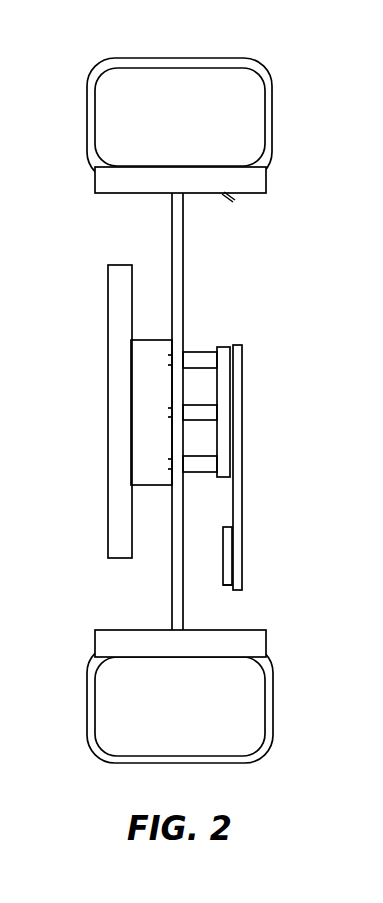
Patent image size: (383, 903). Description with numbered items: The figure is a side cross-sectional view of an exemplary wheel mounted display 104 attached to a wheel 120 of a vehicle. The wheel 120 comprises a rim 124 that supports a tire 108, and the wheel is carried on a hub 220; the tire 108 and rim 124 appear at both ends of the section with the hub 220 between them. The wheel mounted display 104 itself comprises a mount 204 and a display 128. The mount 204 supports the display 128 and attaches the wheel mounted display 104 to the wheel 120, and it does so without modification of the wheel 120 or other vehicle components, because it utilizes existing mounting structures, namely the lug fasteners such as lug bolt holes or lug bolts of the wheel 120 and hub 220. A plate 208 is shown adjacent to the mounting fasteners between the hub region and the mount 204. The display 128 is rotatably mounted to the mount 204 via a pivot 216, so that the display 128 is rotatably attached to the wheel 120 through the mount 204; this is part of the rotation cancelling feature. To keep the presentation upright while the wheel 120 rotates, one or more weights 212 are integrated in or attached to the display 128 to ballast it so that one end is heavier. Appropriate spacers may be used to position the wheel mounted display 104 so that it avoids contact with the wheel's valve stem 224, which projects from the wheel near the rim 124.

The wheel mounted display 104 is at (252, 362).
The tire 108 is at (163, 58).
The wheel 120 is at (183, 227).
The rim 124 is at (110, 194).
The display 128 is at (238, 533).
The mount 204 is at (226, 478).
The flange 208 is at (200, 352).
The weight 212 is at (228, 586).
The pivot 216 is at (230, 412).
The hub 220 is at (122, 265).
The valve stem 224 is at (233, 204).